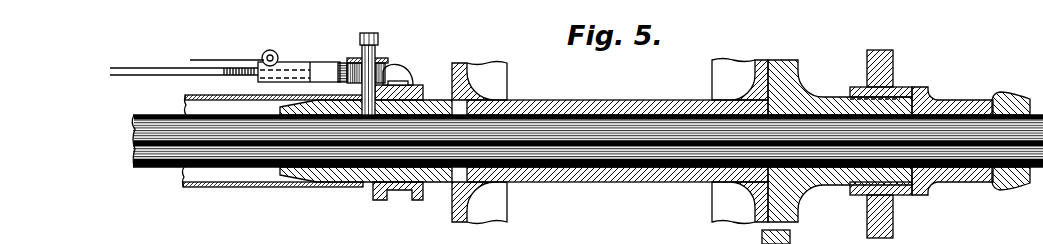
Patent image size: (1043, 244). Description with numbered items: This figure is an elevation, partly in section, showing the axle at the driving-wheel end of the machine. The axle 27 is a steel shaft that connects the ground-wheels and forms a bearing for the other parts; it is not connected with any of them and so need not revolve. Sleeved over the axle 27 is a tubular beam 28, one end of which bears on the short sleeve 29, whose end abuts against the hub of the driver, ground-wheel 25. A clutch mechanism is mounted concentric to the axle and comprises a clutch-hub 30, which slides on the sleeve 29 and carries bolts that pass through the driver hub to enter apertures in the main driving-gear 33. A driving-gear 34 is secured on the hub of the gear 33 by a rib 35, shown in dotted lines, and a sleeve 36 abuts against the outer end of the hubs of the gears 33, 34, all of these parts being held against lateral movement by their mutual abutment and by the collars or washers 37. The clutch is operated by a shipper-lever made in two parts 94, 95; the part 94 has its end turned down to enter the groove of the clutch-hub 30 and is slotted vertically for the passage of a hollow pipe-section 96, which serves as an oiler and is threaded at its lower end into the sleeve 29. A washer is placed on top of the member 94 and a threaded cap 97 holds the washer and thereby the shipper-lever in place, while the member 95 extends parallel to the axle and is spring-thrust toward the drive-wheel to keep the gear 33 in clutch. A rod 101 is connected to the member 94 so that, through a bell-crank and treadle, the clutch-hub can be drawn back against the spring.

The ground-wheel 25 is at (497, 201).
The axle 27 is at (928, 143).
The tubular beam 28 is at (253, 188).
The short sleeve 29 is at (370, 173).
The clutch-hub 30 is at (403, 188).
The main driving-gear 33 is at (795, 213).
The driving-gear 34 is at (883, 212).
The rib 35 is at (851, 96).
The sleeve 36 is at (954, 99).
The collars or washers 37 is at (1010, 184).
The shipper-lever part 94 is at (397, 78).
The shipper-lever part 95 is at (160, 72).
The hollow pipe-section 96 is at (360, 48).
The threaded cap 97 is at (378, 40).
The rod 101 is at (219, 58).